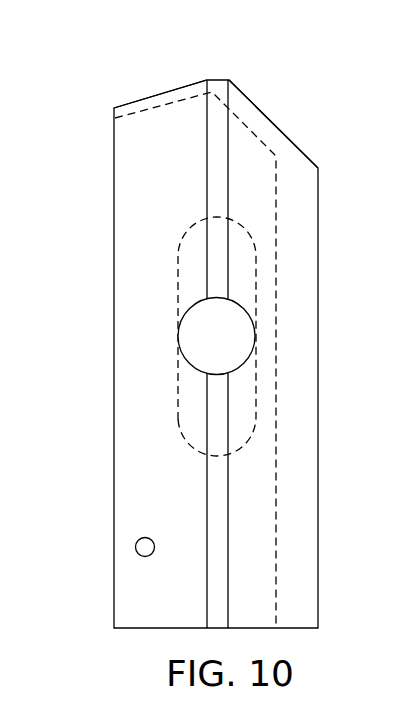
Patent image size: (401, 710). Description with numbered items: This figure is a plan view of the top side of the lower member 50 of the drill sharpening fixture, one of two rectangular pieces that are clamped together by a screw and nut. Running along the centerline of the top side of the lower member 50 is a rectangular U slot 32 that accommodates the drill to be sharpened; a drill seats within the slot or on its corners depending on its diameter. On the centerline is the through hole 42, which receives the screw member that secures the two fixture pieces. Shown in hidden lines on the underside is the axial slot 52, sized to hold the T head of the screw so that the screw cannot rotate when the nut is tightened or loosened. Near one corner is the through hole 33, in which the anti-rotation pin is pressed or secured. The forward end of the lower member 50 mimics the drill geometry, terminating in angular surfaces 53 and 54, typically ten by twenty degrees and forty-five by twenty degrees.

The lower fixture member 50 is at (132, 212).
The ten degree by twenty degree angle 53 is at (162, 92).
The forty-five degree by twenty degree angle 54 is at (273, 125).
The axial slot 52 is at (183, 267).
The U slot 32 is at (220, 197).
The through hole 42 is at (256, 322).
The through hole 33 is at (135, 547).